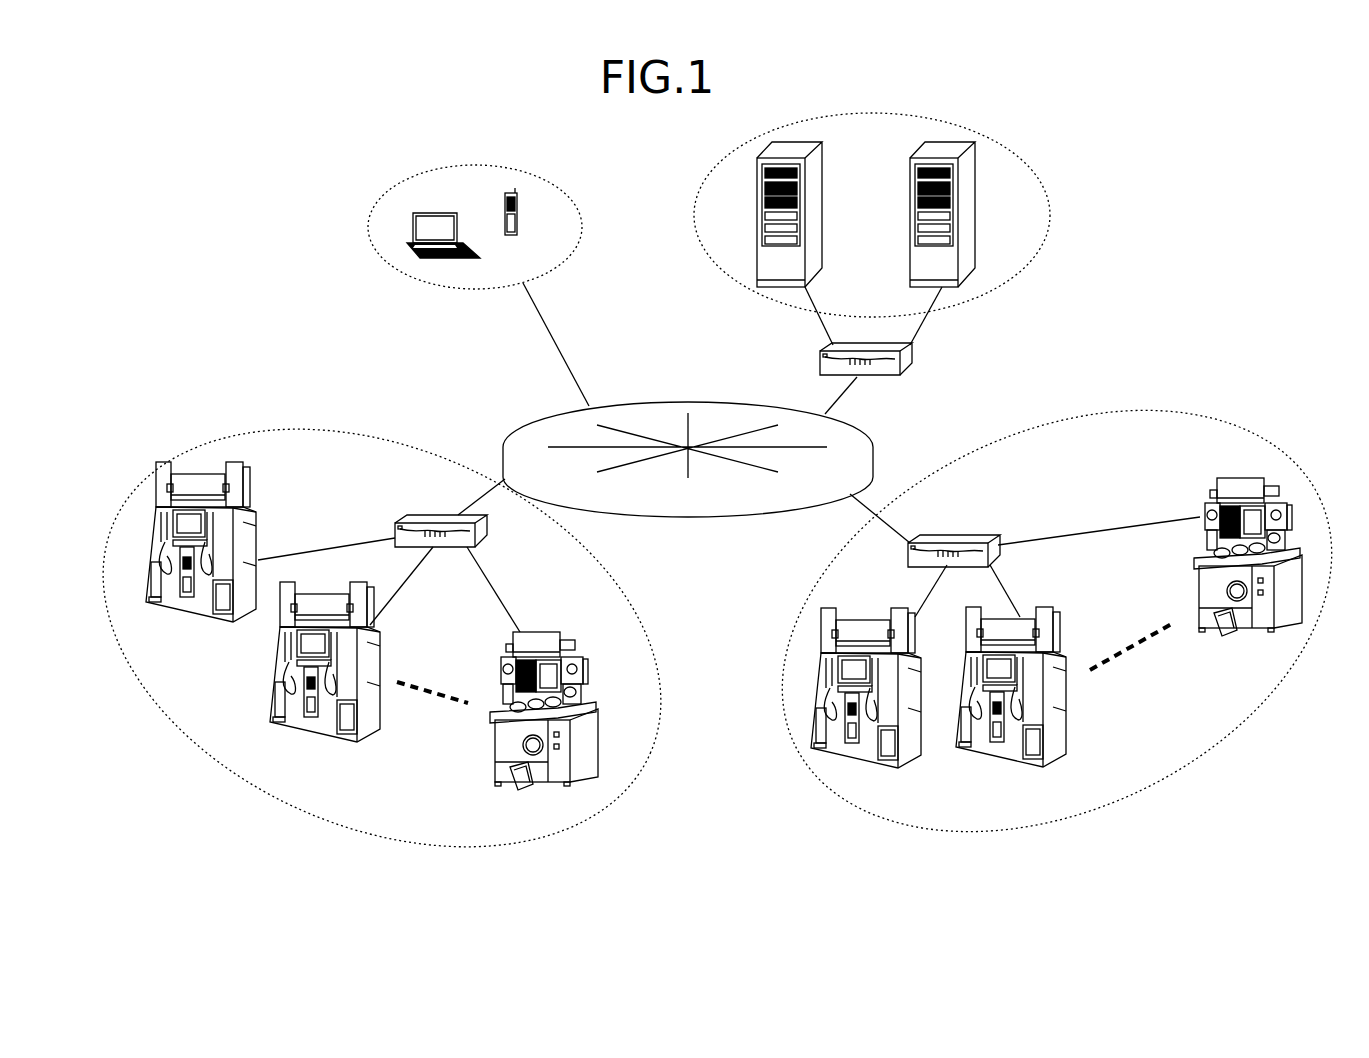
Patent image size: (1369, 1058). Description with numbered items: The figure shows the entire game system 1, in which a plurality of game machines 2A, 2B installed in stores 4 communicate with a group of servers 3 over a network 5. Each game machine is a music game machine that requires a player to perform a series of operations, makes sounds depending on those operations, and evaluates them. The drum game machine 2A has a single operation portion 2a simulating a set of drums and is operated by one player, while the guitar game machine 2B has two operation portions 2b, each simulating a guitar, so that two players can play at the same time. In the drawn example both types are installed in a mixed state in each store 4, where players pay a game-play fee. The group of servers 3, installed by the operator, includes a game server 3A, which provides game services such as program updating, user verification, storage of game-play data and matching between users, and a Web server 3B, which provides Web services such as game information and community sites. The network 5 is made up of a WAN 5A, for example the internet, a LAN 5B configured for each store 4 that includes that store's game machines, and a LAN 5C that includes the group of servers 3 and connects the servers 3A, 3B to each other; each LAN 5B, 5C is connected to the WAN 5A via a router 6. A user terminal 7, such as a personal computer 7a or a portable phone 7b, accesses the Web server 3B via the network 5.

The game system 1 is at (1070, 307).
The game machine 2A is at (580, 752).
The operation portion 2a is at (493, 730).
The game machine 2B is at (177, 602).
The operation portions 2b is at (272, 657).
The group of servers 3 is at (1045, 172).
The game server 3A is at (757, 197).
The Web server 3B is at (910, 197).
The store 4 is at (306, 418).
The network 5 is at (520, 402).
The WAN 5A is at (632, 402).
The LAN 5B is at (303, 510).
The LAN 5C is at (933, 330).
The router 6 is at (820, 363).
The user terminal 7 is at (576, 205).
The personal computer 7a is at (420, 213).
The portable phone 7b is at (517, 196).